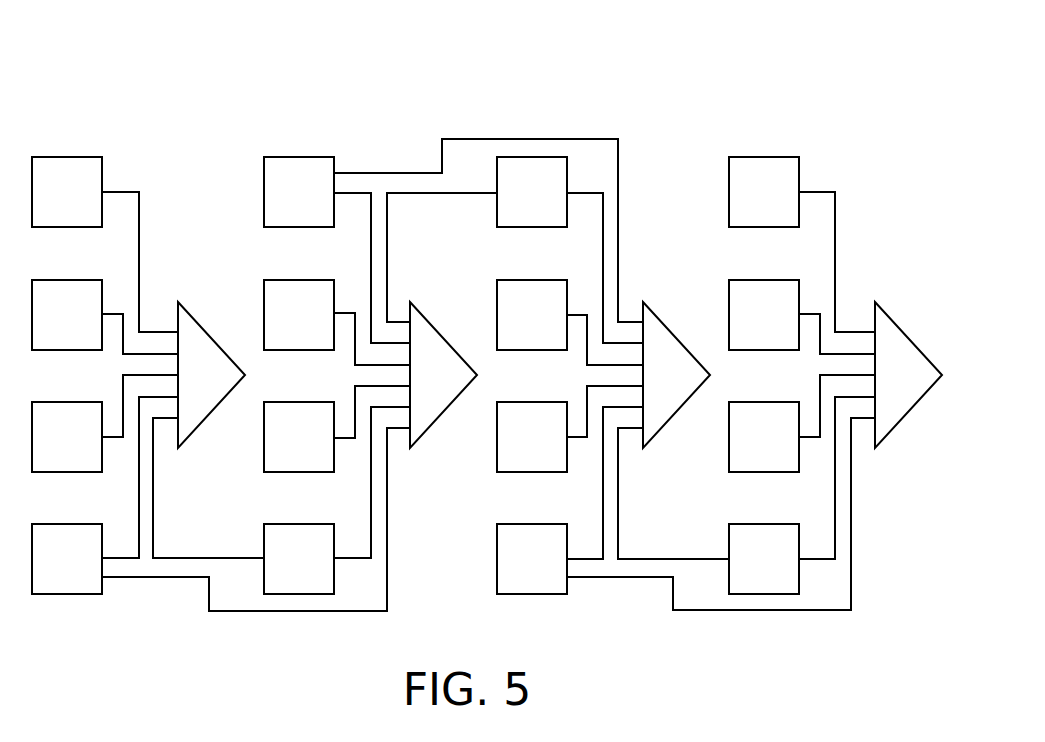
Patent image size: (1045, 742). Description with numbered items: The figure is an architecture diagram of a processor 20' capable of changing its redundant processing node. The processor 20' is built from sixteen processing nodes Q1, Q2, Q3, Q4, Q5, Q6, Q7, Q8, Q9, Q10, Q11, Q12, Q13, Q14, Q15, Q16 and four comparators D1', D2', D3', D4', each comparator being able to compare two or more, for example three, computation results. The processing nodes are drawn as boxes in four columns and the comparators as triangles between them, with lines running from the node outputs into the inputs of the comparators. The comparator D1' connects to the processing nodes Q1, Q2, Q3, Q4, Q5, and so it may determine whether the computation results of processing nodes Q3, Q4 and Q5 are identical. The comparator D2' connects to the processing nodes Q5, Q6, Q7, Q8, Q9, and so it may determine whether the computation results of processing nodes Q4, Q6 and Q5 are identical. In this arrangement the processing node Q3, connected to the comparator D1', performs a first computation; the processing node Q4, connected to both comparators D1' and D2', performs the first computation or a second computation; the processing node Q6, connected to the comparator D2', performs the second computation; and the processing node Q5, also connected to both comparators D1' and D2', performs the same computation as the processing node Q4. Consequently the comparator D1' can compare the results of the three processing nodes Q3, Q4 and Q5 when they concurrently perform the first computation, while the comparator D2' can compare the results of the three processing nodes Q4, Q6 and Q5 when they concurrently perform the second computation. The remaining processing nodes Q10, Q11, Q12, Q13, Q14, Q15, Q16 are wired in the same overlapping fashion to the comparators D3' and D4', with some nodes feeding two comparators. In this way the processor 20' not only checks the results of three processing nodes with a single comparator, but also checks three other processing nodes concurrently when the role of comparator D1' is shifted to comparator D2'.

The processor 20' is at (487, 331).
The processing node Q1 is at (105, 244).
The processing node Q2 is at (105, 317).
The processing node Q3 is at (105, 423).
The processing node Q4 is at (221, 504).
The processing node Q5 is at (281, 500).
The processing node Q6 is at (337, 429).
The processing node Q7 is at (337, 322).
The processing node Q8 is at (453, 241).
The processing node Q9 is at (515, 250).
The processing node Q10 is at (570, 322).
The processing node Q11 is at (570, 429).
The processing node Q12 is at (686, 508).
The processing node Q13 is at (746, 495).
The processing node Q14 is at (802, 423).
The processing node Q15 is at (802, 317).
The processing node Q16 is at (802, 244).
The comparator D1' is at (211, 375).
The comparator D2' is at (443, 375).
The comparator D3' is at (676, 375).
The comparator D4' is at (908, 375).